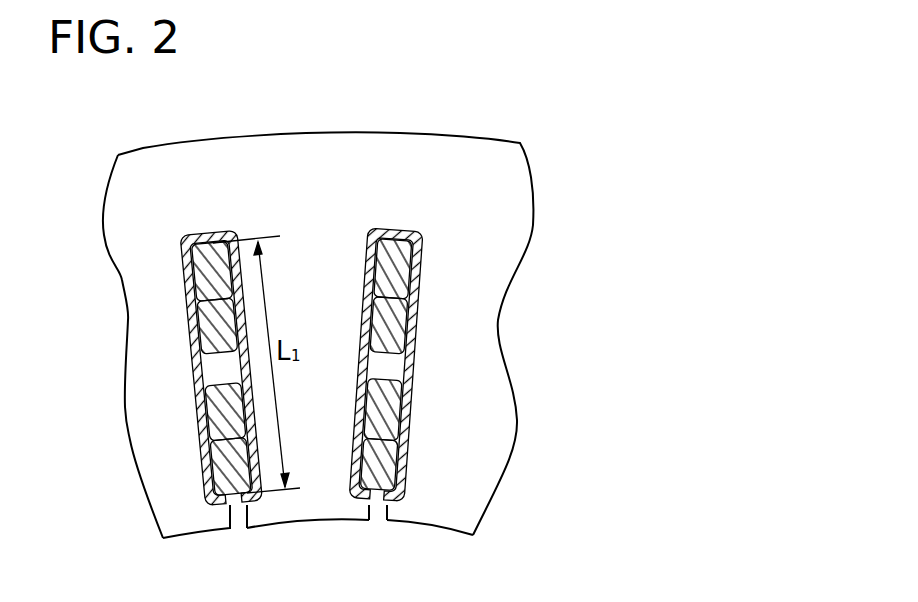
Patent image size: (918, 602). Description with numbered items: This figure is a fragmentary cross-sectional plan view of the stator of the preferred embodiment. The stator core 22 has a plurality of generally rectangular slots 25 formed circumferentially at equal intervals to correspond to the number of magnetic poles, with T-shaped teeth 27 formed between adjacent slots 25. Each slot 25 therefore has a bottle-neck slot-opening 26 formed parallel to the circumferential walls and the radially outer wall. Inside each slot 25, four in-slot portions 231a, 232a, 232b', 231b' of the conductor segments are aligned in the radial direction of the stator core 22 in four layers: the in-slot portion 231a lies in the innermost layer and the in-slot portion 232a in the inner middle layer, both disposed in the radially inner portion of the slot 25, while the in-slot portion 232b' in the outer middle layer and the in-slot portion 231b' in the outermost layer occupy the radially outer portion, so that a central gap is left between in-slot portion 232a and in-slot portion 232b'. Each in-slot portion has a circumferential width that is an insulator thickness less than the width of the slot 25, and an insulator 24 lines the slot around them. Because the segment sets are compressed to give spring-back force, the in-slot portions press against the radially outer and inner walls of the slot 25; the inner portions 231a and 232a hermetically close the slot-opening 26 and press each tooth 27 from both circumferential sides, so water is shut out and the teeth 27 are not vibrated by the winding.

The stator core 22 is at (333, 153).
The slot insulator 24 is at (422, 240).
The slot 25 is at (198, 230).
The slot-opening 26 is at (382, 517).
The tooth 27 is at (297, 512).
The in-slot portion 231a is at (392, 463).
The in-slot portion 231b' is at (501, 269).
The in-slot portion 232a is at (396, 405).
The in-slot portion 232b' is at (499, 325).